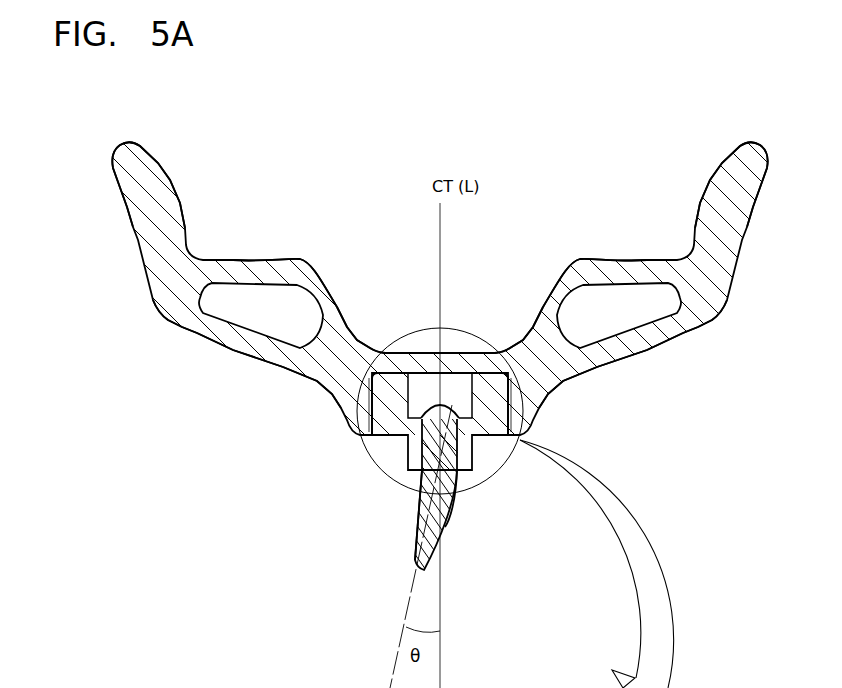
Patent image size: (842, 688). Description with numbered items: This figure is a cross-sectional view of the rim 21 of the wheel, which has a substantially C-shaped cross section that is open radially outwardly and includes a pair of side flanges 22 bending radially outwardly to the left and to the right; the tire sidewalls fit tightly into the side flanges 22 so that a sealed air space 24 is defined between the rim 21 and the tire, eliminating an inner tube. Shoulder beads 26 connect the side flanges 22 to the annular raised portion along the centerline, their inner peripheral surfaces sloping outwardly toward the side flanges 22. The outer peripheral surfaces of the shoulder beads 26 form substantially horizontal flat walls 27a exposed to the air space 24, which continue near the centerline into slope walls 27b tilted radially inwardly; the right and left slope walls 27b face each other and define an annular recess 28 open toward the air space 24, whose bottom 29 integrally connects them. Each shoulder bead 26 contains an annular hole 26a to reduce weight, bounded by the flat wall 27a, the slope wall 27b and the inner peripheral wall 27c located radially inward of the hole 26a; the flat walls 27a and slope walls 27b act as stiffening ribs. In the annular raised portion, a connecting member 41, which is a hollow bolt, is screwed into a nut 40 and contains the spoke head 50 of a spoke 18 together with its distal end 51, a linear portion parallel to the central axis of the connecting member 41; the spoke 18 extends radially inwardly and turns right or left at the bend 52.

The spoke 18 is at (452, 529).
The rim 21 is at (243, 383).
The side flange 22 is at (156, 155).
The air space 24 is at (398, 138).
The shoulder bead 26 is at (222, 346).
The hole 26a is at (283, 317).
The flat wall 27a is at (247, 260).
The slope wall 27b is at (325, 280).
The inner peripheral wall 27c is at (276, 368).
The annular recess 28 is at (348, 322).
The bottom 29 is at (466, 352).
The nut 40 is at (435, 476).
The connecting member 41 is at (405, 455).
The spoke head 50 is at (414, 333).
The distal end 51 is at (424, 482).
The bend 52 is at (458, 497).